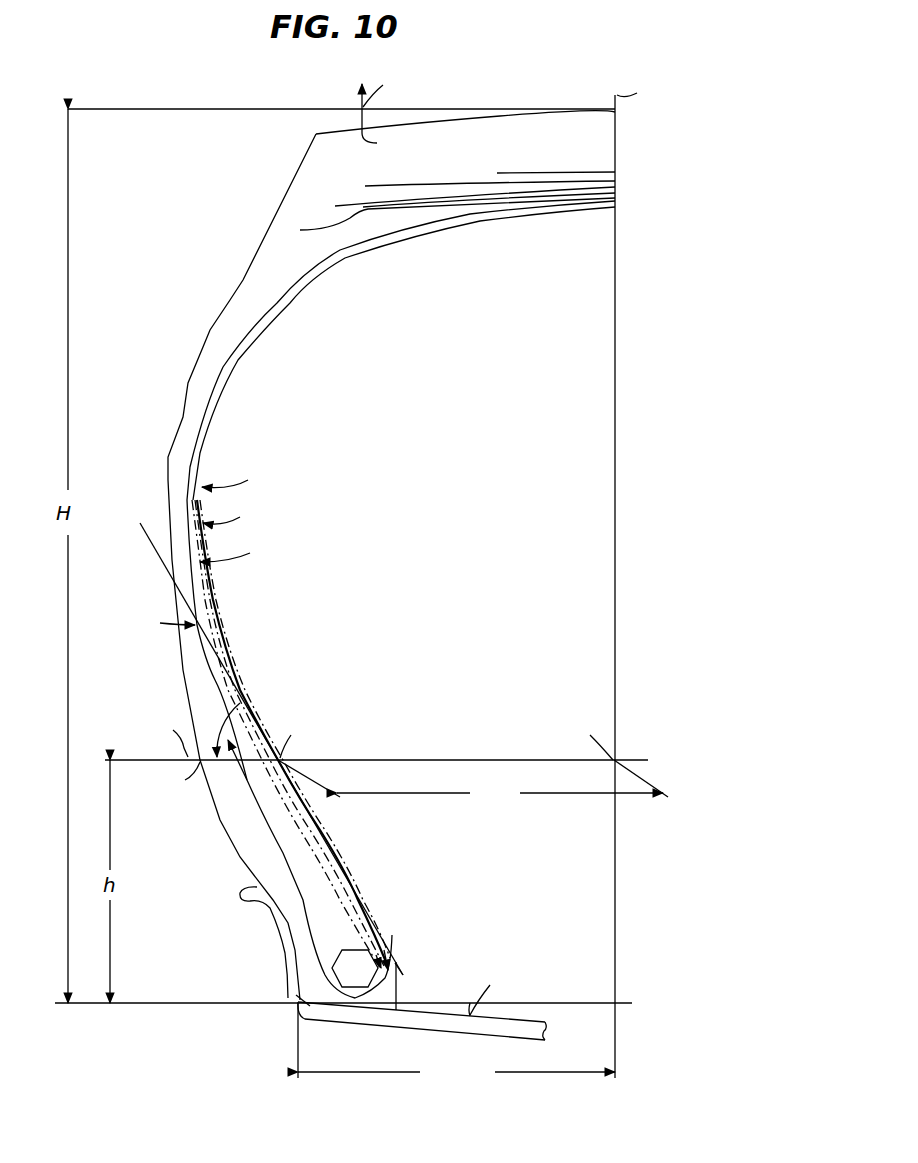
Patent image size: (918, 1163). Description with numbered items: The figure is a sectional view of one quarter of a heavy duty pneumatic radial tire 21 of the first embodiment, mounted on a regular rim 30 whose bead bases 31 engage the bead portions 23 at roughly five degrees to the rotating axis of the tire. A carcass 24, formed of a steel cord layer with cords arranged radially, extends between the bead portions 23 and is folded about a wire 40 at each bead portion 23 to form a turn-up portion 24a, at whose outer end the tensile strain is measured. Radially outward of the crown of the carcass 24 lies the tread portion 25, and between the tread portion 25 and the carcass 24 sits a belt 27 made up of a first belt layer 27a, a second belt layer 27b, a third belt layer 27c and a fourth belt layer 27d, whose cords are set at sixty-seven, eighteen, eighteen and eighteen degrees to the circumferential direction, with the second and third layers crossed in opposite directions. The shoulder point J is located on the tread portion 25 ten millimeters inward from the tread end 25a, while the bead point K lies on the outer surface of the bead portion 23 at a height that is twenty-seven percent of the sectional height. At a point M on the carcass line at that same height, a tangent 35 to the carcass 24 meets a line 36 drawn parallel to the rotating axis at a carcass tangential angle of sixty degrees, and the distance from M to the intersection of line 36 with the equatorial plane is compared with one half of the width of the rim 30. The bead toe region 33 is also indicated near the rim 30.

The pneumatic radial tire 21 is at (563, 99).
The bead portion 23 is at (236, 860).
The carcass 24 is at (233, 363).
The turn-up portion of the carcass 24a is at (362, 263).
The tread portion 25 is at (432, 115).
The end of the tread portion 25a is at (316, 133).
The belt 27 is at (620, 172).
The first belt layer 27a is at (300, 230).
The second belt layer 27b is at (335, 206).
The third belt layer 27c is at (405, 186).
The fourth belt layer 27d is at (535, 172).
The rim 30 is at (392, 1030).
The bead base of the rim 31 is at (434, 1010).
The bead toe 33 is at (303, 997).
The tangent to the carcass line 35 is at (143, 535).
The line parallel with the rotating axis 36 is at (640, 760).
The wire 40 is at (348, 950).